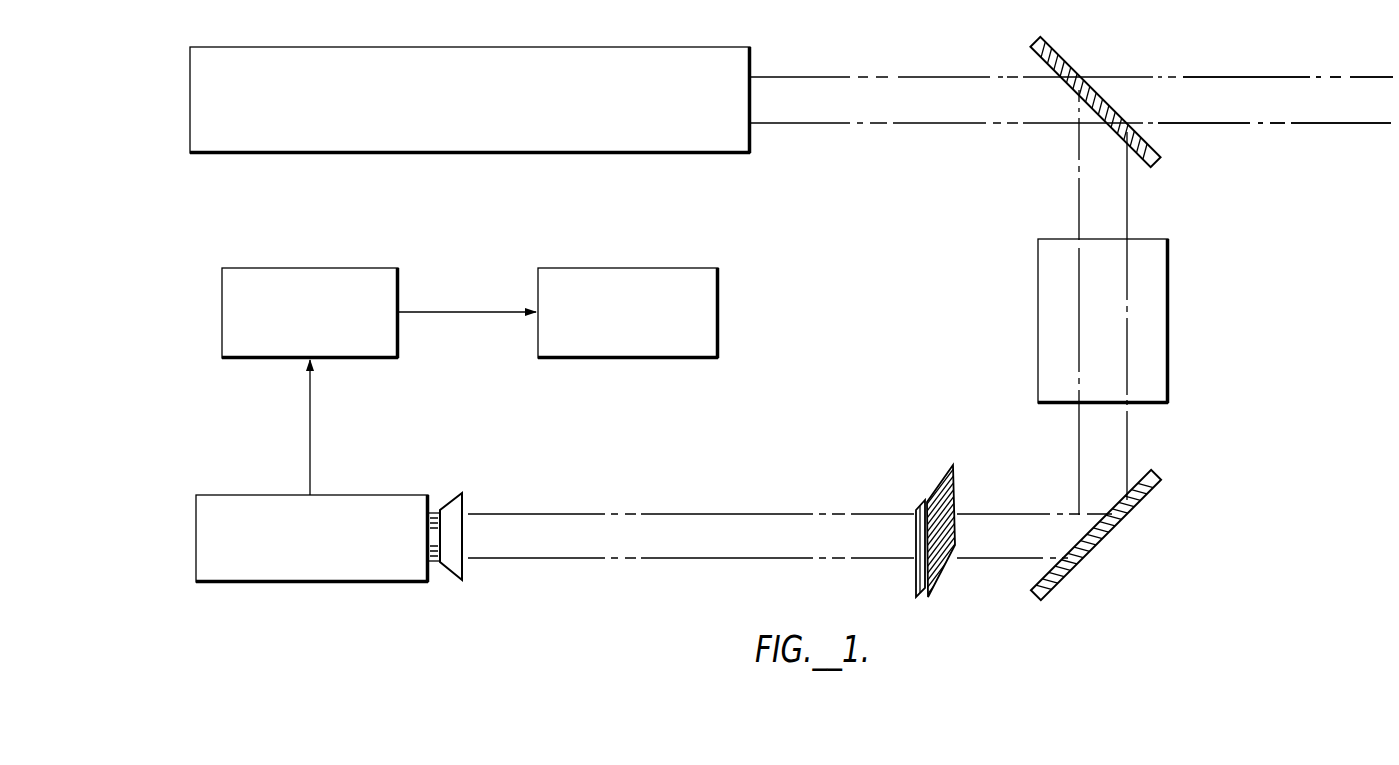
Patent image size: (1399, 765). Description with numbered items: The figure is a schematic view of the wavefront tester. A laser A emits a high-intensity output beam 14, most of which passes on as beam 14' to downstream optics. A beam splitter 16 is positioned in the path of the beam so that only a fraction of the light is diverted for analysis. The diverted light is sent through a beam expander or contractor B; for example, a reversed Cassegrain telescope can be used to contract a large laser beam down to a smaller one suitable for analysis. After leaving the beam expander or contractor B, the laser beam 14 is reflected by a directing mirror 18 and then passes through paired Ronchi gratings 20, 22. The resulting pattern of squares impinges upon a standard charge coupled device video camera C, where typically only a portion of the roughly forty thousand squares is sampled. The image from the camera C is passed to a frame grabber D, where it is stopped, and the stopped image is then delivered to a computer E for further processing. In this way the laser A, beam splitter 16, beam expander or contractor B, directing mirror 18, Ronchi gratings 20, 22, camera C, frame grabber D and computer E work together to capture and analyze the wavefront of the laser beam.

The laser A is at (630, 47).
The output beam 14 is at (930, 304).
The beam 14' is at (1275, 86).
The beam splitter 16 is at (1058, 56).
The beam expander or contractor B is at (1170, 285).
The directing mirror 18 is at (1142, 497).
The Ronchi grating 20 is at (958, 494).
The Ronchi grating 22 is at (926, 500).
The camera C is at (390, 495).
The frame grabber D is at (378, 267).
The computer E is at (695, 266).